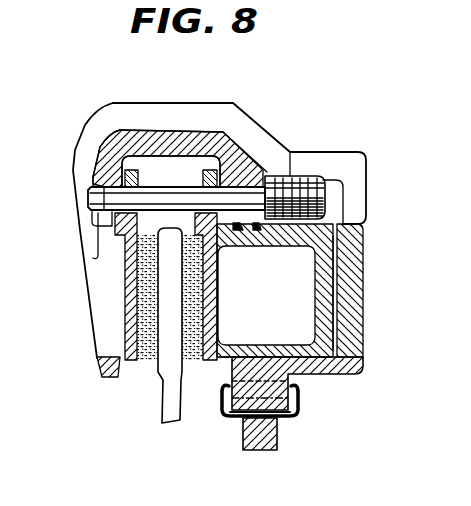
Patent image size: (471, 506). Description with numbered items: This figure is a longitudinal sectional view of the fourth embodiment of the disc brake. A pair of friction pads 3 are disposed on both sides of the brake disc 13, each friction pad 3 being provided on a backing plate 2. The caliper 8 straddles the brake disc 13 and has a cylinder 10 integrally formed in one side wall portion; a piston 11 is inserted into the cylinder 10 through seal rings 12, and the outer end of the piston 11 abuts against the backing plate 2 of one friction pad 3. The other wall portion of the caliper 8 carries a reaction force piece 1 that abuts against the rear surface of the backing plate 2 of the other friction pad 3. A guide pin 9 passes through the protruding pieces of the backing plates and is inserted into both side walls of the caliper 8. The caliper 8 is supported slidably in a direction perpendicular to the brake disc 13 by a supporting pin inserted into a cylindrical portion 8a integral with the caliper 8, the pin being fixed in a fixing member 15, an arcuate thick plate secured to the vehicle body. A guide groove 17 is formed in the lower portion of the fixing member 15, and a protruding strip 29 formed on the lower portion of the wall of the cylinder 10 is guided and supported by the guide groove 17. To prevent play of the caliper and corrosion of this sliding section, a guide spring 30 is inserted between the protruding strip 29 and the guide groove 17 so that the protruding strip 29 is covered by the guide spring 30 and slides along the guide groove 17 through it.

The reaction force piece 1 is at (93, 304).
The backing plate 2 is at (123, 265).
The friction pad 3 is at (140, 333).
The caliper 8 is at (220, 104).
The cylindrical portion 8a is at (343, 160).
The guide pin 9 is at (268, 174).
The cylinder 10 is at (350, 257).
The piston 11 is at (318, 282).
The seal ring 12 is at (258, 357).
The brake disc 13 is at (173, 228).
The fixing member 15 is at (243, 440).
The guide groove 17 is at (288, 420).
The protruding strip 29 is at (233, 418).
The guide spring 30 is at (297, 405).